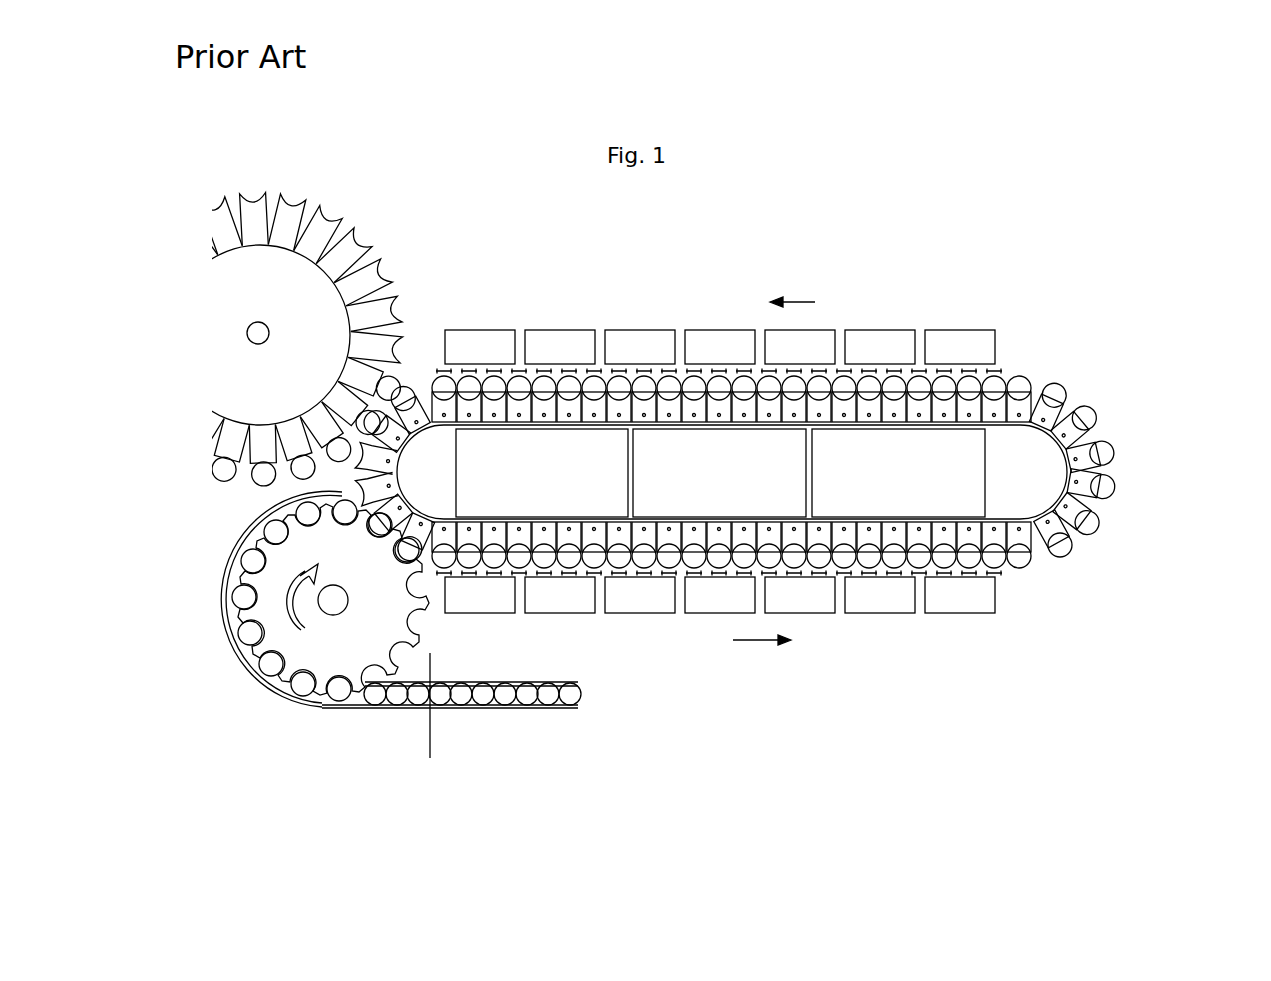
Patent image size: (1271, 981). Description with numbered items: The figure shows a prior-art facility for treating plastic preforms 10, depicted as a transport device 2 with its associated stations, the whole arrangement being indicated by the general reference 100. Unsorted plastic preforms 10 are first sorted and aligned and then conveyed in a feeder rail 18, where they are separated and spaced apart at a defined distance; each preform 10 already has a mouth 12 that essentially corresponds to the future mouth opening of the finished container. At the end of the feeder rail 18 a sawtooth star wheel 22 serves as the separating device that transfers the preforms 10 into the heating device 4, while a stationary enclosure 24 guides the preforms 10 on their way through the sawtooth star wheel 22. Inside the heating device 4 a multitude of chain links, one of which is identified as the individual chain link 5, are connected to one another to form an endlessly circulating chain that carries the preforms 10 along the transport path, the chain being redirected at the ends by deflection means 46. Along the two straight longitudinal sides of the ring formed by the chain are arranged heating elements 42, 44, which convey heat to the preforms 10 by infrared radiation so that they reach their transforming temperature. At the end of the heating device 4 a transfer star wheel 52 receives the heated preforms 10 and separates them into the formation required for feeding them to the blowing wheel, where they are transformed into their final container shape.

The transport device 2 is at (1121, 481).
The heating device 4 is at (783, 418).
The individual chain link 5 is at (842, 408).
The plastic preform 10 is at (305, 688).
The preform mouth 12 is at (430, 738).
The feeder rail 18 is at (540, 683).
The sawtooth star wheel 22 is at (270, 607).
The enclosure 24 is at (228, 598).
The heating element 42 is at (957, 607).
The heating element 44 is at (967, 347).
The deflection means 46 is at (1048, 464).
The transfer star wheel 52 is at (390, 264).
The apparatus 100 is at (783, 477).